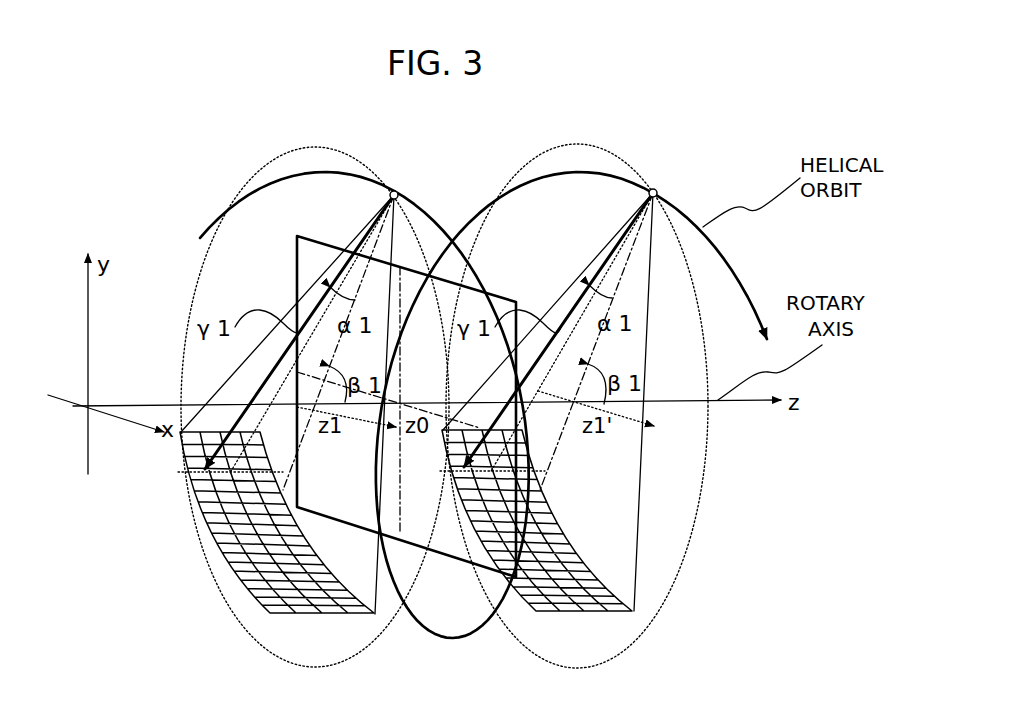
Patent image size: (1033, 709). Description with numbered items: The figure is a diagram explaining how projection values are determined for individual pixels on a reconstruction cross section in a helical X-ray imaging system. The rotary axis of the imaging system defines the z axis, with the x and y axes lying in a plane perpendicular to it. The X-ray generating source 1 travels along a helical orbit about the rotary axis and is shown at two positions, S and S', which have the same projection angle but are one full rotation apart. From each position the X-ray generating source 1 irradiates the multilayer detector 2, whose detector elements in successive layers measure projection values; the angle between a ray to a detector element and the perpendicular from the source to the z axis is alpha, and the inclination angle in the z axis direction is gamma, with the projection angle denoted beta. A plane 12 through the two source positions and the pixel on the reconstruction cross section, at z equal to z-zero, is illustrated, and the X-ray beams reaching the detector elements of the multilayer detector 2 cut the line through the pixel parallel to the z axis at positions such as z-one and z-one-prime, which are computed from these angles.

The X-ray generating source 1 is at (397, 192).
The multilayer detector 2 is at (268, 613).
The virtual detector plane 12 is at (467, 285).